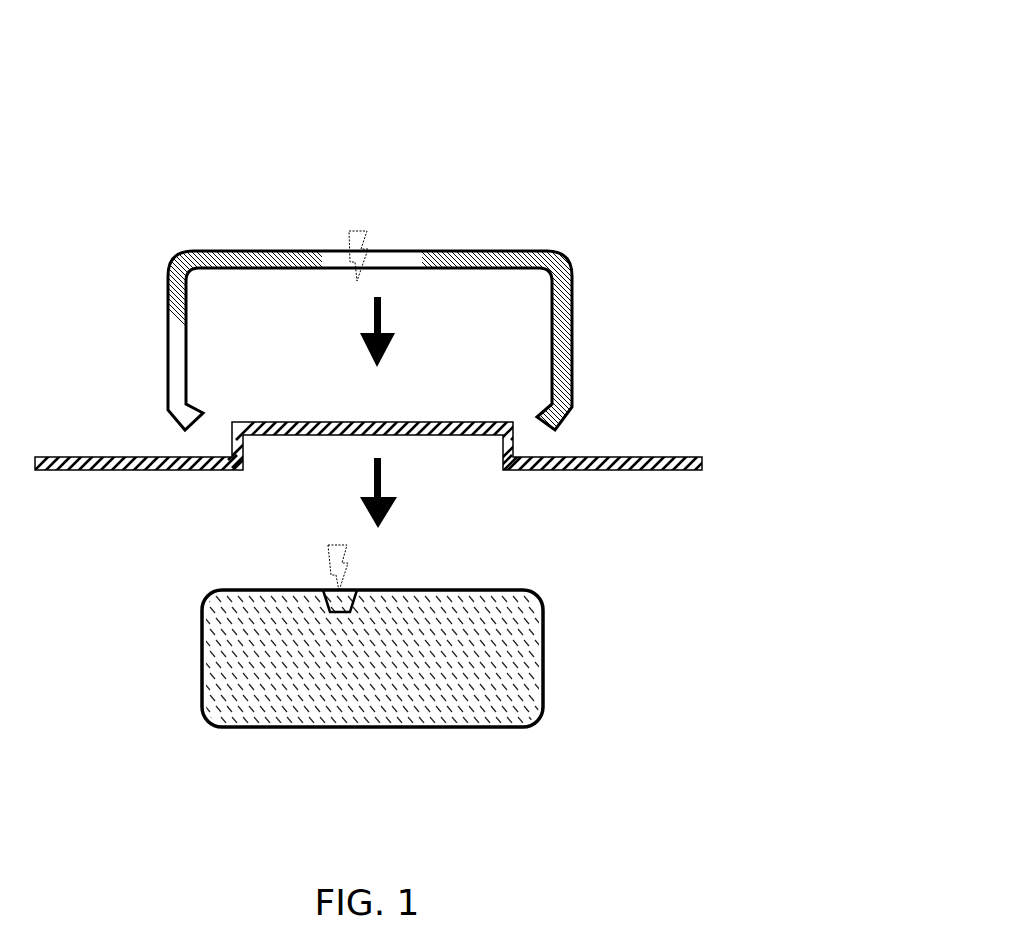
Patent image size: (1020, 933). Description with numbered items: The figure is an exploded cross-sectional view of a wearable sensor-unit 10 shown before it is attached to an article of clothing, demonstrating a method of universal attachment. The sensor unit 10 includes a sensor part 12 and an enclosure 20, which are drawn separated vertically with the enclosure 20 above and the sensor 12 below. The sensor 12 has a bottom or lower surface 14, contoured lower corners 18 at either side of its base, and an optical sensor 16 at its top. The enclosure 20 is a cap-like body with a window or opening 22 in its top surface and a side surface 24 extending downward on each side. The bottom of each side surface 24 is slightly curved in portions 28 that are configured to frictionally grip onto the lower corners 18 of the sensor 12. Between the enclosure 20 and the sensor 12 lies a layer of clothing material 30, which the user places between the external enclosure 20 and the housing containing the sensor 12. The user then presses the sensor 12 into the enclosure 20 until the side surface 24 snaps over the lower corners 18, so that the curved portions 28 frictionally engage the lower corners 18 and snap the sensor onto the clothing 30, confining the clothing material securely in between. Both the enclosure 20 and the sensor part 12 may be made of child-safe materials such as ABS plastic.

The wearable sensor-unit 10 is at (645, 69).
The sensor part 12 is at (542, 678).
The bottom or lower surface 14 is at (309, 738).
The optical sensor 16 is at (349, 590).
The contoured lower corners 18 is at (215, 728).
The enclosure 20 is at (222, 248).
The window or opening 22 is at (397, 253).
The side surface 24 is at (180, 332).
The curved portions 28 is at (196, 403).
The article of clothing 30 is at (680, 452).